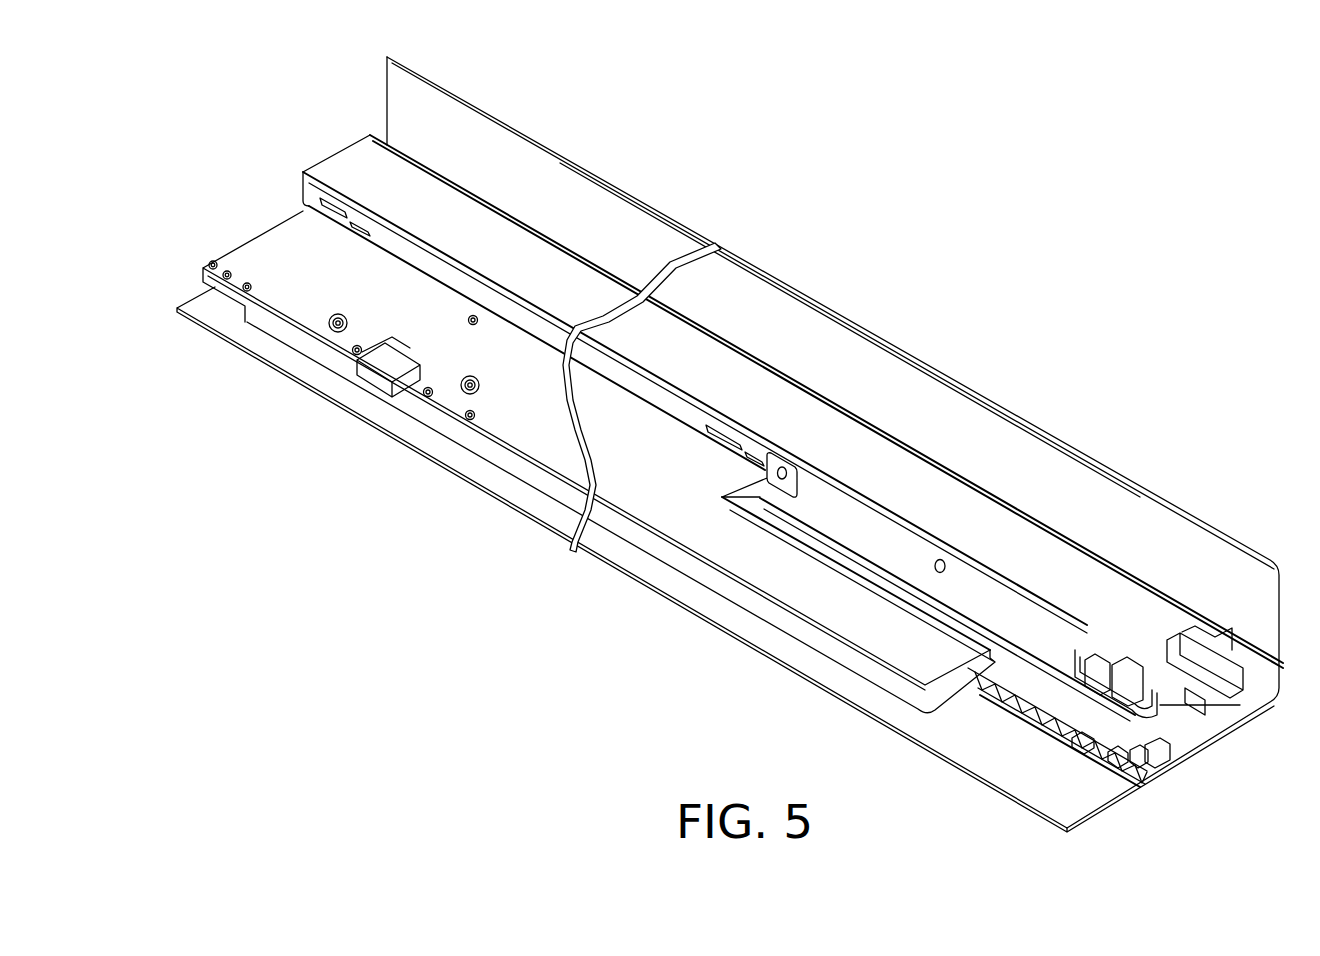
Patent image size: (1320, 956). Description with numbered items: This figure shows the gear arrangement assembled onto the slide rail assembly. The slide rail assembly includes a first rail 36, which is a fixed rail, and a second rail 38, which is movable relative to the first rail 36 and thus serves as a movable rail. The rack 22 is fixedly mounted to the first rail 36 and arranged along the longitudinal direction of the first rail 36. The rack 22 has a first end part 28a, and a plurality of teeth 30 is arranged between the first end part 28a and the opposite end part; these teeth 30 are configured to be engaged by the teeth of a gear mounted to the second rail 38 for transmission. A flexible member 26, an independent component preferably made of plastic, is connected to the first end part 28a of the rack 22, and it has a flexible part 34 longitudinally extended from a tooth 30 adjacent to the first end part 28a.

The rack 22 is at (1050, 700).
The flexible member 26 is at (1155, 752).
The first end part 28a is at (1138, 755).
The teeth 30 is at (1082, 743).
The flexible part 34 is at (1152, 747).
The first rail 36 is at (176, 306).
The second rail 38 is at (300, 187).